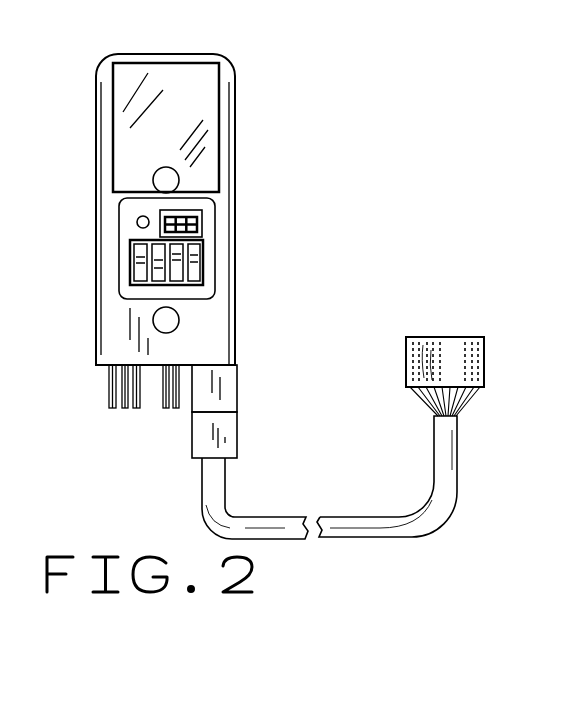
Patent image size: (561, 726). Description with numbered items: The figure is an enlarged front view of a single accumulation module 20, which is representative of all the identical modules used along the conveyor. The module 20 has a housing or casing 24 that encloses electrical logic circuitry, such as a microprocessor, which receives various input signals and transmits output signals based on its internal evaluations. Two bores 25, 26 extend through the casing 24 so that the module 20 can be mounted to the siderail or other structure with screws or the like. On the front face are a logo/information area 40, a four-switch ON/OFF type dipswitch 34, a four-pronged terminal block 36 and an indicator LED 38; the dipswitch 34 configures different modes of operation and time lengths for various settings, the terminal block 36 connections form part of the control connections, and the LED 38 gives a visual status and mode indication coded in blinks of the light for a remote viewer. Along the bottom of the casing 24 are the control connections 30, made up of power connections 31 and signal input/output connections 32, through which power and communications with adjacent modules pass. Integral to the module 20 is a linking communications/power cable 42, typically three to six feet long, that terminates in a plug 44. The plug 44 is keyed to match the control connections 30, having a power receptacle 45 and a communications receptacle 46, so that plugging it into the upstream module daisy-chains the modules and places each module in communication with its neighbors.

The accumulation module 20 is at (172, 194).
The housing or casing 24 is at (235, 157).
The bore 25 is at (162, 177).
The bore 26 is at (160, 320).
The control connections 30 is at (144, 444).
The power connections 31 is at (168, 414).
The signal input/output connections 32 is at (122, 414).
The dipswitch 34 is at (201, 220).
The terminal block 36 is at (140, 262).
The indicator LED 38 is at (137, 222).
The logo/information area 40 is at (193, 109).
The linking communications/power cable 42 is at (339, 525).
The plug 44 is at (445, 335).
The power receptacle 45 is at (466, 329).
The communications receptacle 46 is at (424, 327).